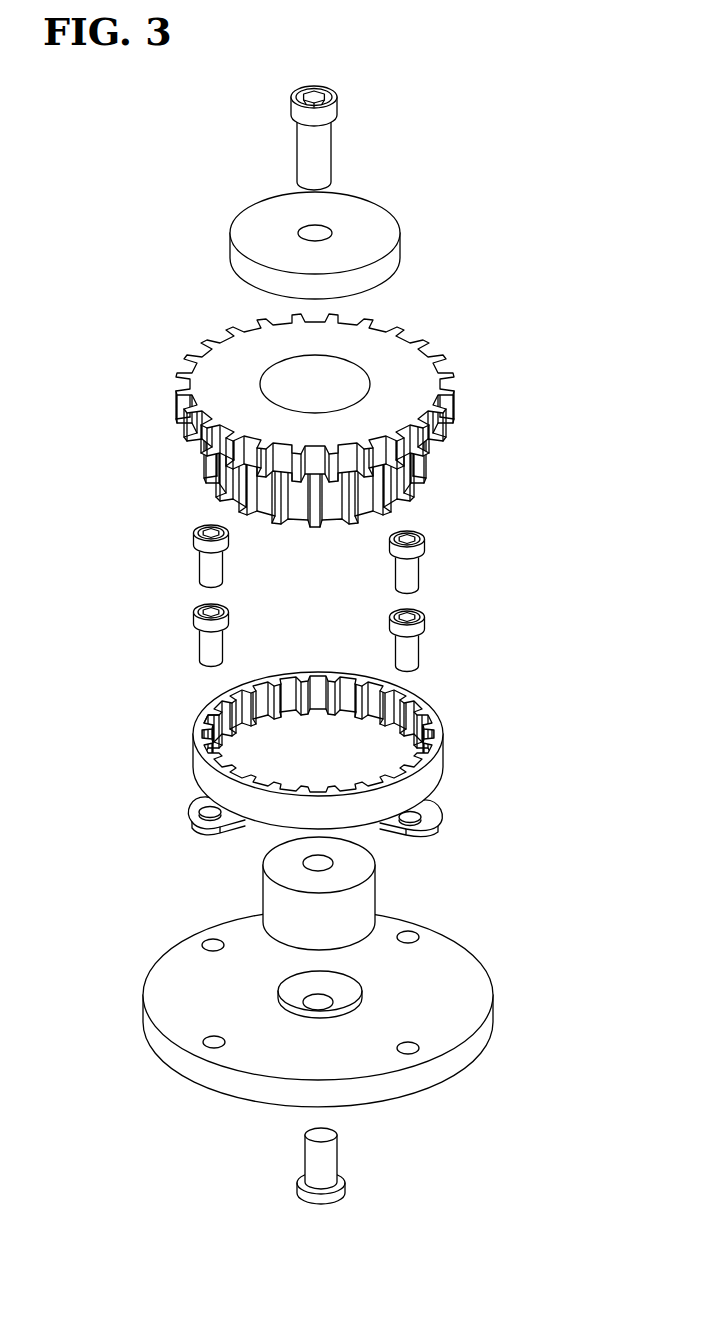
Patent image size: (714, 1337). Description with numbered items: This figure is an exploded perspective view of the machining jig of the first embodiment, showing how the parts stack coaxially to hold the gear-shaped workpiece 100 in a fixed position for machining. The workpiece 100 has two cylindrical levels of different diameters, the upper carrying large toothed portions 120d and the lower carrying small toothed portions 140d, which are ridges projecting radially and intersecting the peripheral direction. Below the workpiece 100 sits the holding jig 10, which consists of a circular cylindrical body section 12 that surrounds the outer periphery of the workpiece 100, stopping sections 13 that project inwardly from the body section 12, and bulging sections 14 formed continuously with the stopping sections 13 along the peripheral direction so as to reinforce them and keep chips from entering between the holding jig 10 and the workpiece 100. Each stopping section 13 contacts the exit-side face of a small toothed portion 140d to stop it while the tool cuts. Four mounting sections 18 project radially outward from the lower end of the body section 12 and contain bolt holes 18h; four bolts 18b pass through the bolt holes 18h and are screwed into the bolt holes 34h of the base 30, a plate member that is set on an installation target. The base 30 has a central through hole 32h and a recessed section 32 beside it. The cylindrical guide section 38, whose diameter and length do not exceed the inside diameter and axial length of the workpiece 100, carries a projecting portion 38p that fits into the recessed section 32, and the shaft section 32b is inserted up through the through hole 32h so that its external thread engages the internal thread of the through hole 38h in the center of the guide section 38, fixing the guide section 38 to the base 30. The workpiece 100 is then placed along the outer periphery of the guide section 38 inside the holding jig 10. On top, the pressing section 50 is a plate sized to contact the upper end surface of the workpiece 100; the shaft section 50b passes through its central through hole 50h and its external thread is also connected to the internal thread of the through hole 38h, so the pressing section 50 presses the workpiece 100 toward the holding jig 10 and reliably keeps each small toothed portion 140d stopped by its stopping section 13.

The holding jig 10 is at (348, 767).
The body section 12 is at (323, 750).
The stopping section 13 is at (217, 721).
The bulging section 14 is at (210, 729).
The mounting section 18 is at (271, 818).
The bolt hole 18h is at (207, 807).
The bolt 18b is at (205, 570).
The base 30 is at (331, 972).
The recessed section 32 is at (308, 1000).
The through hole 32h is at (315, 999).
The shaft section 32b is at (317, 1157).
The bolt hole 34h is at (207, 1040).
The guide section 38 is at (350, 893).
The through hole 38h is at (308, 862).
The projecting portion 38p is at (332, 945).
The pressing section 50 is at (350, 215).
The through hole 50h is at (312, 233).
The shaft section 50b is at (307, 142).
The workpiece 100 is at (389, 420).
The large toothed portion 120d is at (457, 390).
The small toothed portion 140d is at (418, 458).